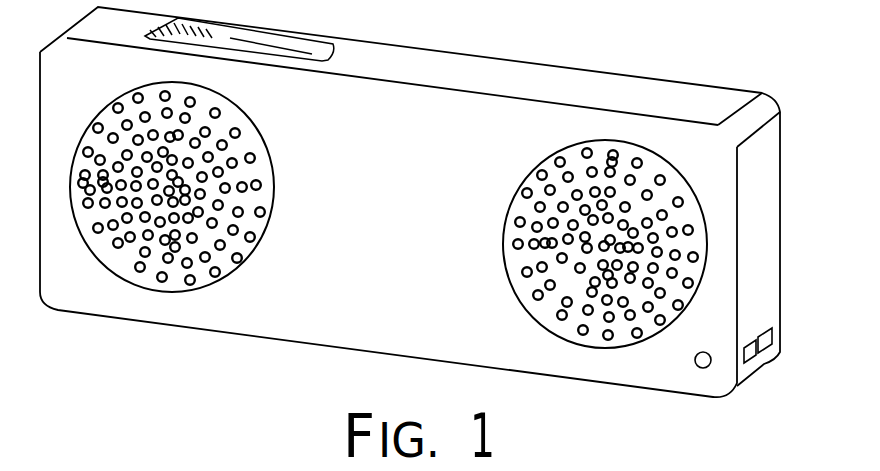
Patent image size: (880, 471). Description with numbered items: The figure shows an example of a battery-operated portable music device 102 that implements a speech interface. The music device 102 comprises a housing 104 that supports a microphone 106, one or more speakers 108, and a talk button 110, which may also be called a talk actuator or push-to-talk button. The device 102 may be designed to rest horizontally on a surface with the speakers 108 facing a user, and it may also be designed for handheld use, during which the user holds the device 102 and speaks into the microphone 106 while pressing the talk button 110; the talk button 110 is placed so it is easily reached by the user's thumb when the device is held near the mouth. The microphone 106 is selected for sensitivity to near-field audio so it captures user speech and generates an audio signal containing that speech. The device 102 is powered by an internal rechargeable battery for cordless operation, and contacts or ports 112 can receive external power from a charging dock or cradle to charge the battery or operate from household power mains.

The portable music device 102 is at (716, 90).
The housing 104 is at (496, 63).
The microphone 106 is at (695, 360).
The speakers 108 is at (230, 120).
The talk button 110 is at (314, 44).
The contacts or ports 112 is at (775, 330).